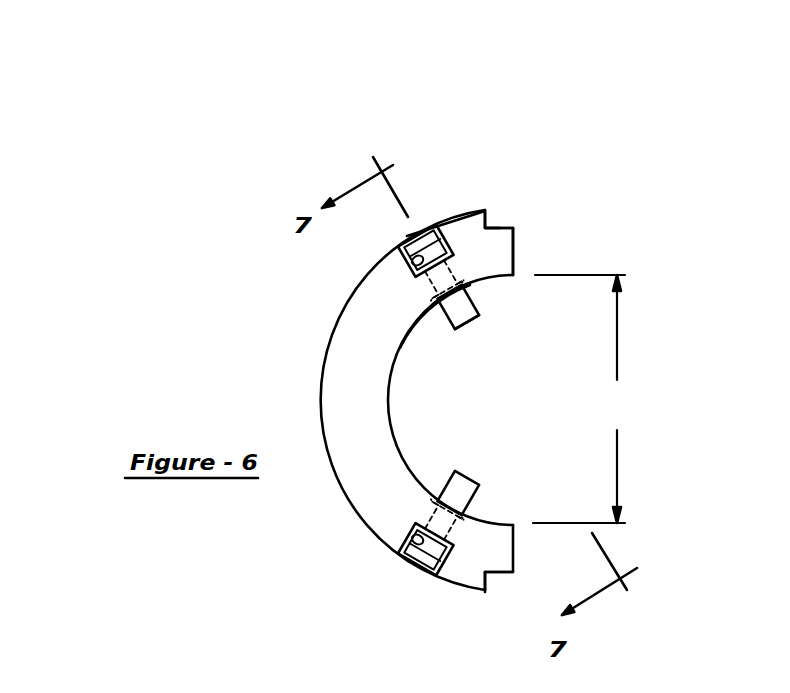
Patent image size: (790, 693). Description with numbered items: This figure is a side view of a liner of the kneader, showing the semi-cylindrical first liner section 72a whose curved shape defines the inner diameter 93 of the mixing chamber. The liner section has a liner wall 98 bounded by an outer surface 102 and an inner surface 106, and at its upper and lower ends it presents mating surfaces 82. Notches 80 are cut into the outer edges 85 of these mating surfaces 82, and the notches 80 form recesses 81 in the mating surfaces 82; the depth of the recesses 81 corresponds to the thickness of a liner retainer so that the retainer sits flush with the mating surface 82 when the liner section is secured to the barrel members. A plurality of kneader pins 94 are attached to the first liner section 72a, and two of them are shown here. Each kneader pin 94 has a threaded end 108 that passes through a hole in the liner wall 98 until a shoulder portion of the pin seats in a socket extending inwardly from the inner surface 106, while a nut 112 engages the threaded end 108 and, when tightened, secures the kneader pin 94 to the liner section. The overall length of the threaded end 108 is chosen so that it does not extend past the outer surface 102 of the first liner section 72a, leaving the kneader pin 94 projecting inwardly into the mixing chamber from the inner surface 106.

The first liner section 72a is at (332, 338).
The liner wall 98 is at (353, 458).
The inner surface 106 is at (400, 348).
The notches 80 is at (495, 222).
The nut 112 is at (488, 218).
The recesses 81 is at (497, 226).
The mating surfaces 82 is at (513, 262).
The outer edges 85 is at (470, 214).
The threaded end 108 is at (417, 232).
The outer surface 102 is at (438, 217).
The kneader pins 94 is at (458, 327).
The inner diameter 93 is at (580, 399).